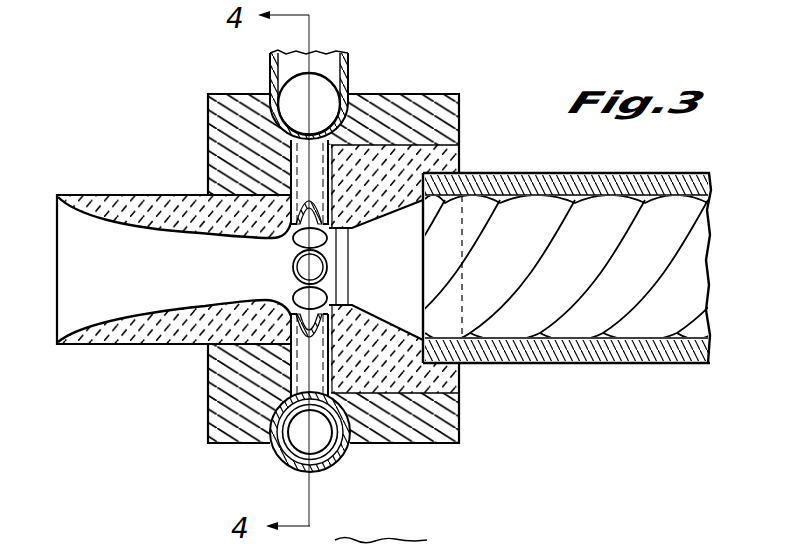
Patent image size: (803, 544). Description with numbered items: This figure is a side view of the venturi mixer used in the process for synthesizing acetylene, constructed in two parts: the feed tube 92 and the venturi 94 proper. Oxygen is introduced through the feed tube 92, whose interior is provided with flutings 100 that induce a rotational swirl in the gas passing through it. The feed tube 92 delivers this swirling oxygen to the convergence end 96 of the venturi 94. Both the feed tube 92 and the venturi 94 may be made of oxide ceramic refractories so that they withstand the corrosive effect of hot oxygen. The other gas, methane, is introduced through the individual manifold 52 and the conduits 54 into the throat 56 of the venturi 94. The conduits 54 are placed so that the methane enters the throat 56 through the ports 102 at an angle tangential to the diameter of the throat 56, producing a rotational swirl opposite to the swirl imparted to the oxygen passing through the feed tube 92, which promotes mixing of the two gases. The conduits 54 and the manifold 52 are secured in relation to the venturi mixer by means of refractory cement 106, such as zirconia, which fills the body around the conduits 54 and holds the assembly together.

The individual manifold 52 is at (349, 98).
The conduits 54 is at (310, 268).
The throat 56 is at (323, 283).
The feed tube 92 is at (578, 364).
The venturi 94 is at (197, 345).
The convergence end 96 is at (373, 229).
The flutings 100 is at (646, 199).
The ports 102 is at (293, 239).
The refractory cement 106 is at (426, 444).